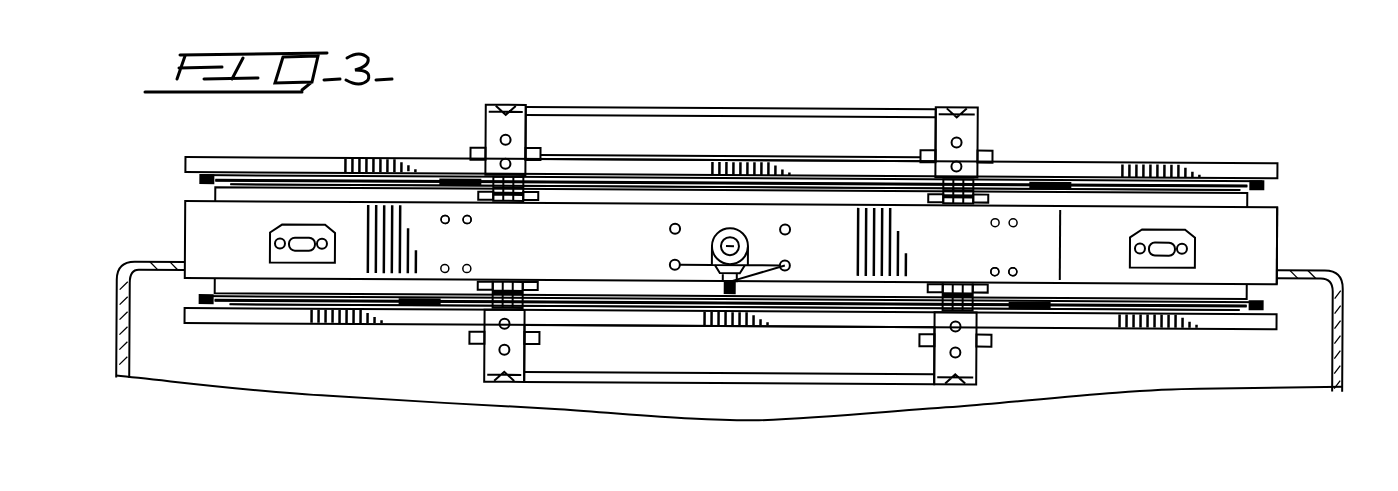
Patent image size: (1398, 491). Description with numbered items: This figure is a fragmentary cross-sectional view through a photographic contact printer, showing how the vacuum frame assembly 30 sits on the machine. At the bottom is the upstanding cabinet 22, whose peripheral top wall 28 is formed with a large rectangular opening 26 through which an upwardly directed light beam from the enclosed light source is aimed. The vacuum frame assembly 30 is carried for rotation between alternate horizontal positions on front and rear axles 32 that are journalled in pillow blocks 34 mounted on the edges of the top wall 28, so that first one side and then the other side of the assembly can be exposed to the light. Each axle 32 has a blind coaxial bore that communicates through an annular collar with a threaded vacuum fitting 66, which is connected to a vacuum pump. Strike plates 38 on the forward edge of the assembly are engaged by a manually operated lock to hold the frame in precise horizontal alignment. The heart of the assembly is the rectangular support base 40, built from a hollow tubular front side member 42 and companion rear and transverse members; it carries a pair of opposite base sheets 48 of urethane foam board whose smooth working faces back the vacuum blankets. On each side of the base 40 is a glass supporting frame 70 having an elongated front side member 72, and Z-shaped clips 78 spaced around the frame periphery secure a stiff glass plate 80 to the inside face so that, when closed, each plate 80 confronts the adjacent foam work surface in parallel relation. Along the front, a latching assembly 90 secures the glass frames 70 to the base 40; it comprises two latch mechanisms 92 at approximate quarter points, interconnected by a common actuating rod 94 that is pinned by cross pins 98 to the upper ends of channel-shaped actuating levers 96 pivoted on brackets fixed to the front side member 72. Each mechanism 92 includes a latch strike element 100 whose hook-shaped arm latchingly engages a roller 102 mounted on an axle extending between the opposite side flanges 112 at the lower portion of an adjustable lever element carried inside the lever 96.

The cabinet 22 is at (1342, 341).
The opening 26 is at (1300, 268).
The top wall 28 is at (150, 262).
The vacuum frame assembly 30 is at (1279, 219).
The axle 32 is at (712, 243).
The pillow block 34 is at (733, 227).
The strike plate 38 is at (337, 243).
The support base 40 is at (1106, 216).
The front side member 42 is at (1088, 252).
The base sheet 48 is at (305, 190).
The vacuum fitting 66 is at (760, 273).
The glass supporting frame 70 is at (1030, 164).
The front side member 72 is at (413, 163).
The clip 78 is at (440, 178).
The glass plate 80 is at (252, 177).
The latching assembly 90 is at (699, 108).
The latch mechanism 92 is at (513, 104).
The actuating rod 94 is at (775, 112).
The actuating lever 96 is at (527, 130).
The cross pin 98 is at (507, 107).
The latch strike element 100 is at (515, 286).
The roller 102 is at (497, 286).
The side flange 112 is at (470, 191).